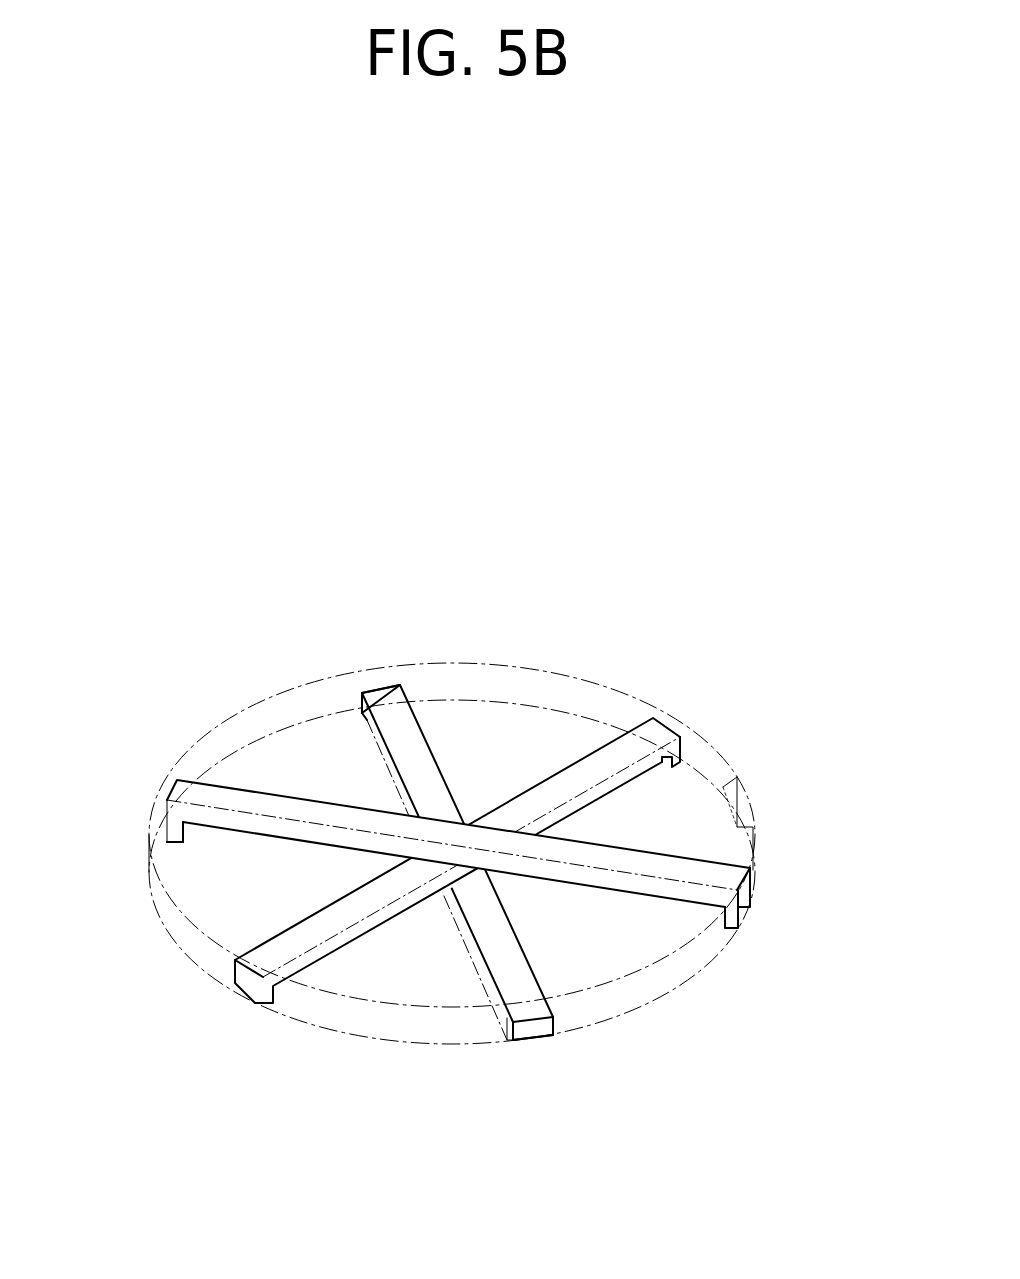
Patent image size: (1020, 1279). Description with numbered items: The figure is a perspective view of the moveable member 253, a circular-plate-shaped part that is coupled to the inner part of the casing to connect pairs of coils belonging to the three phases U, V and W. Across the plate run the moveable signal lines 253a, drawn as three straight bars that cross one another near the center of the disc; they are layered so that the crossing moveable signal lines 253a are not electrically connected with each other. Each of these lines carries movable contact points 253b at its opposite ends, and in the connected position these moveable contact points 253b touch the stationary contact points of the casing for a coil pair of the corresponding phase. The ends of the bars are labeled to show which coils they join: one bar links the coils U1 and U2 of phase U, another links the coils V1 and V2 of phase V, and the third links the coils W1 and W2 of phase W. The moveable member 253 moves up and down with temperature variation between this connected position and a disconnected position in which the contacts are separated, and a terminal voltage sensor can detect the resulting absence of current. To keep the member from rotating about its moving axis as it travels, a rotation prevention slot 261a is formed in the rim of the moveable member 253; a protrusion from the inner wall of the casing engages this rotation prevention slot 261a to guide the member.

The moveable member 253 is at (461, 861).
The moveable signal lines 253a is at (303, 807).
The moveable contact points 253b is at (165, 850).
The rotation prevention slot 261a is at (737, 803).
The U-phase coil U1 is at (456, 832).
The U-phase coil U2 is at (535, 1056).
The V-phase coil V1 is at (446, 879).
The V-phase coil V2 is at (688, 723).
The W-phase coil W1 is at (435, 854).
The W-phase coil W2 is at (762, 910).